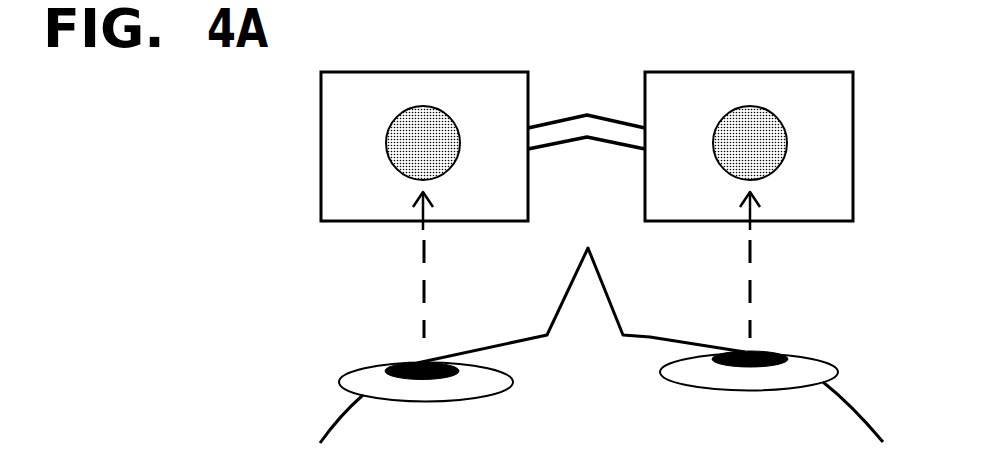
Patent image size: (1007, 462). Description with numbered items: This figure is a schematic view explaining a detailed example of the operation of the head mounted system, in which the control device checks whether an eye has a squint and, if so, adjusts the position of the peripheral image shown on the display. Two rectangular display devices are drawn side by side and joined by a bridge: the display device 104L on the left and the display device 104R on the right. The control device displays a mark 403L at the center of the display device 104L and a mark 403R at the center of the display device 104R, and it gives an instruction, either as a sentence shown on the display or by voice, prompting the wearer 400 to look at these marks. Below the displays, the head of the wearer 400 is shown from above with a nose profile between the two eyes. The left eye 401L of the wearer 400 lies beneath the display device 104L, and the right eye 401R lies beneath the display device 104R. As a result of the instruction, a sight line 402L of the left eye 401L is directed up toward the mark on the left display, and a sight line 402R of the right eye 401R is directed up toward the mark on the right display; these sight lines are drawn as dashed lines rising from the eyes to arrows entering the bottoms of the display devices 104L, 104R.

The display device 104L is at (367, 72).
The display device 104R is at (720, 72).
The mark 403L is at (435, 110).
The mark 403R is at (765, 110).
The sight line 402L is at (425, 297).
The sight line 402R is at (752, 297).
The left eye 401L is at (478, 363).
The right eye 401R is at (802, 355).
The wearer 400 is at (862, 402).